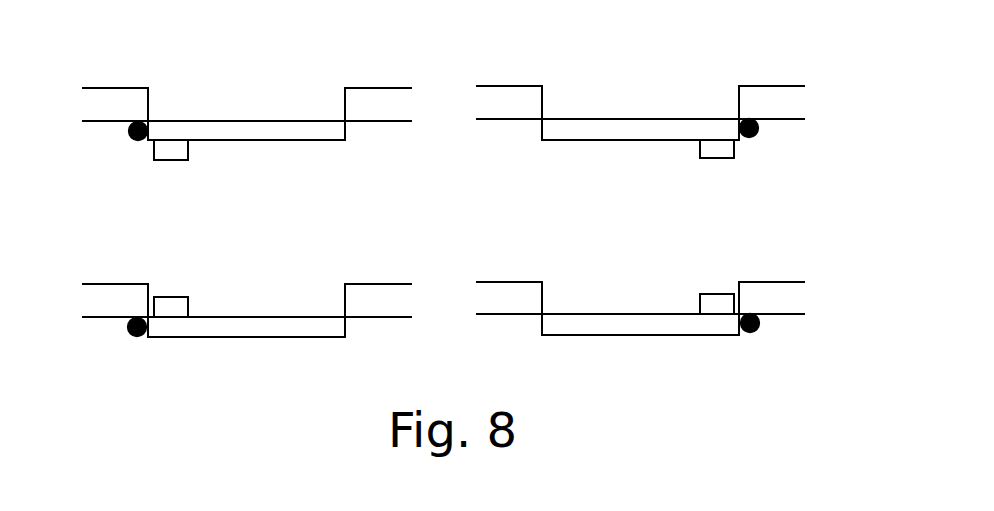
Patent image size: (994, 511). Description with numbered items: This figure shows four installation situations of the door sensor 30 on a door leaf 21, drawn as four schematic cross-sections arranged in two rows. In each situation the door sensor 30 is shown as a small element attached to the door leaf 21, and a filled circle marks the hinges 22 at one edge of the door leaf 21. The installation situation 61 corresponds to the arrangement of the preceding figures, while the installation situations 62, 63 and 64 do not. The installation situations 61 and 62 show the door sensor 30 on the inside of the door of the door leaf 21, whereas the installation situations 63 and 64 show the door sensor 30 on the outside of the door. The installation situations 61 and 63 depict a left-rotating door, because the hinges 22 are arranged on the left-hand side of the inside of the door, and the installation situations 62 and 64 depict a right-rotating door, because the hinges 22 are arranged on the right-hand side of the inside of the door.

The installation situation 61 is at (203, 71).
The installation situation 62 is at (702, 71).
The installation situation 63 is at (202, 371).
The installation situation 64 is at (682, 368).
The door leaf 21 is at (673, 325).
The hinges 22 is at (132, 137).
The door sensor 30 is at (177, 153).